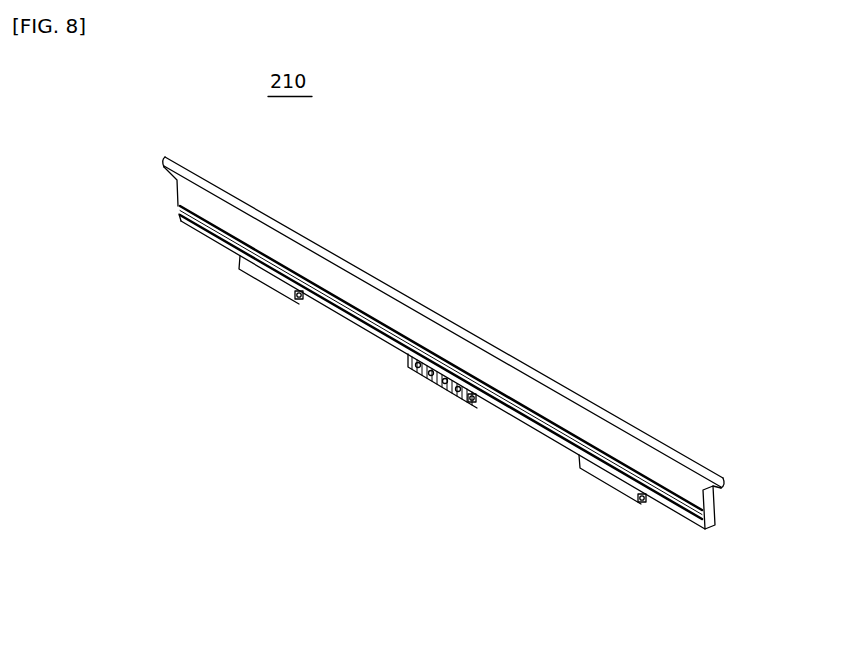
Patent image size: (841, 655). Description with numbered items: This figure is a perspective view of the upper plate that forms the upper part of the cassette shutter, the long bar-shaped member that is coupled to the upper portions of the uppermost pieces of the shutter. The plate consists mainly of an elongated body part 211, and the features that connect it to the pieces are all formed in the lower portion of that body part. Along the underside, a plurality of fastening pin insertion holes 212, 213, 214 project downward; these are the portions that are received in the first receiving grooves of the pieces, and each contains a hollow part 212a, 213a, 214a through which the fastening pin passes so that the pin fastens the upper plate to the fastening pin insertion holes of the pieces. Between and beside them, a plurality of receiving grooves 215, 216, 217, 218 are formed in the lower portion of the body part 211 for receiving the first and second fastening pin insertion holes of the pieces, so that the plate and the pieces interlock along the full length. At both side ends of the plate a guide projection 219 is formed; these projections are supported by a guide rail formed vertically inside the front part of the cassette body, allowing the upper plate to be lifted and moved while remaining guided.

The body part 211 is at (449, 341).
The fastening pin insertion hole 212 is at (610, 488).
The hollow part 212a is at (645, 508).
The fastening pin insertion hole 213 is at (440, 393).
The hollow part 213a is at (473, 406).
The fastening pin insertion hole 214 is at (267, 283).
The hollow part 214a is at (298, 303).
The receiving groove 215 is at (671, 519).
The receiving groove 216 is at (530, 433).
The receiving groove 217 is at (360, 332).
The receiving groove 218 is at (212, 247).
The guide projection 219 is at (162, 161).